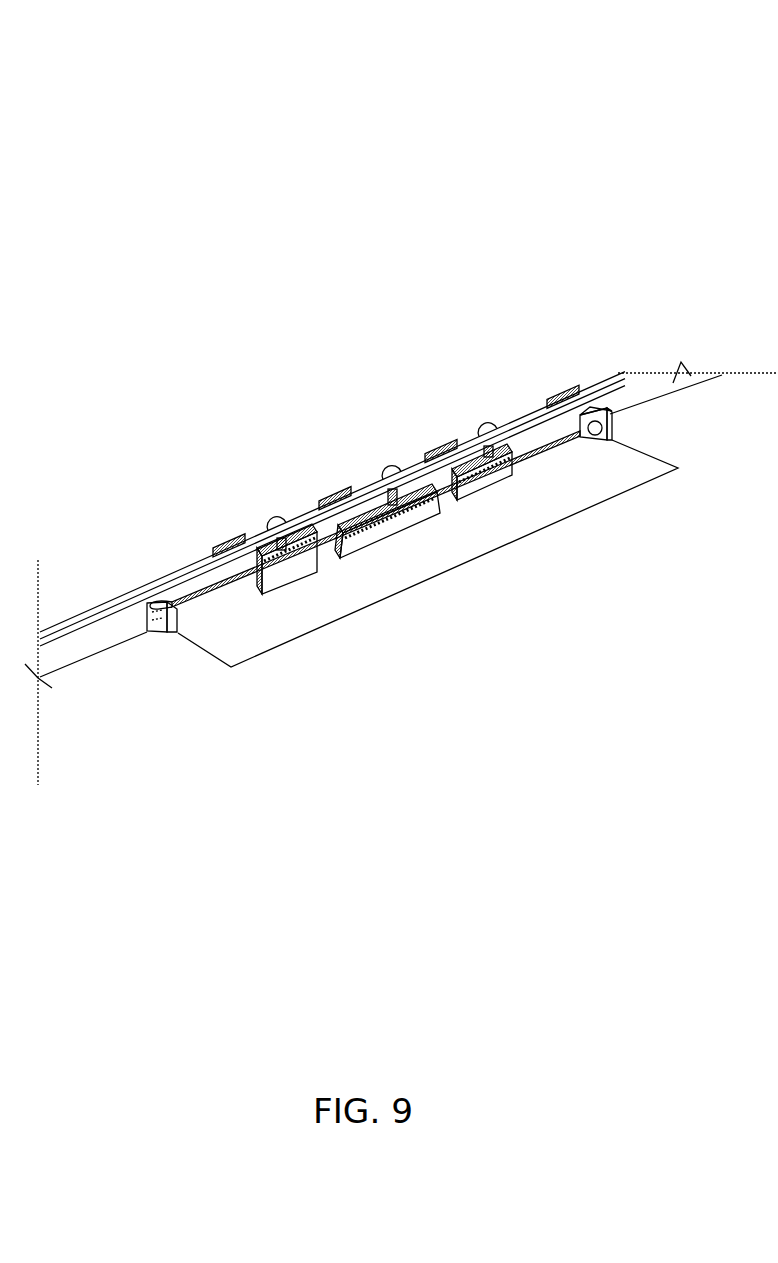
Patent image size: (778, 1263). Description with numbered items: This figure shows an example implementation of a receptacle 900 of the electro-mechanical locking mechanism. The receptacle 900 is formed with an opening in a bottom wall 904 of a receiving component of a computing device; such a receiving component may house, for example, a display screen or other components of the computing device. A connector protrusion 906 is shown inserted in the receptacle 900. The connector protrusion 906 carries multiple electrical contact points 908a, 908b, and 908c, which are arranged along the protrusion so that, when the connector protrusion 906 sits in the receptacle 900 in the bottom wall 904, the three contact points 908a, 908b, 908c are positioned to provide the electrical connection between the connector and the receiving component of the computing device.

The receptacle 900 is at (117, 79).
The bottom wall 904 is at (92, 633).
The connector protrusion 906 is at (547, 463).
The electrical contact point 908a is at (280, 540).
The electrical contact point 908b is at (392, 498).
The electrical contact point 908c is at (485, 456).